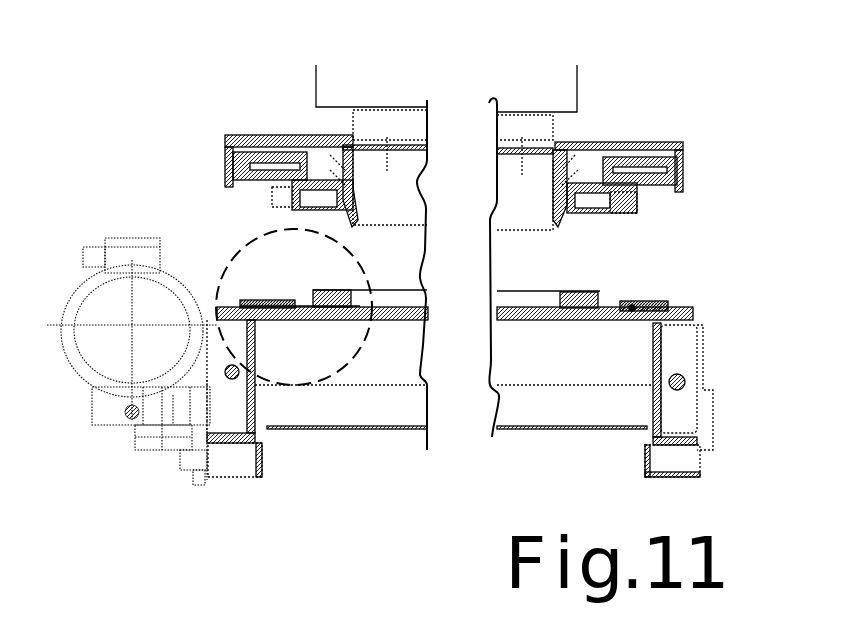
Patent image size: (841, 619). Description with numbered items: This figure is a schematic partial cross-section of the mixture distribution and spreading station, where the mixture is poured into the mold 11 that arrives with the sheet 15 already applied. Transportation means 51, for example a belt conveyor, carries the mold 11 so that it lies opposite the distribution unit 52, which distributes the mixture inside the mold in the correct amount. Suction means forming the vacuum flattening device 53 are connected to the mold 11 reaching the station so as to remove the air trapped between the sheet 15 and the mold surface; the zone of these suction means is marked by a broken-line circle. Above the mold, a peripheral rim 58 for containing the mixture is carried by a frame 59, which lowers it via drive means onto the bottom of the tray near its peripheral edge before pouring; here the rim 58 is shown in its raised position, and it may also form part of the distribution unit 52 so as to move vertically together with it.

The mold 11 is at (600, 288).
The sheet 15 is at (521, 290).
The transportation means 51 is at (287, 464).
The distribution unit 52 is at (314, 85).
The vacuum flattening device 53 is at (263, 296).
The peripheral rim 58 is at (352, 227).
The frame 59 is at (216, 132).